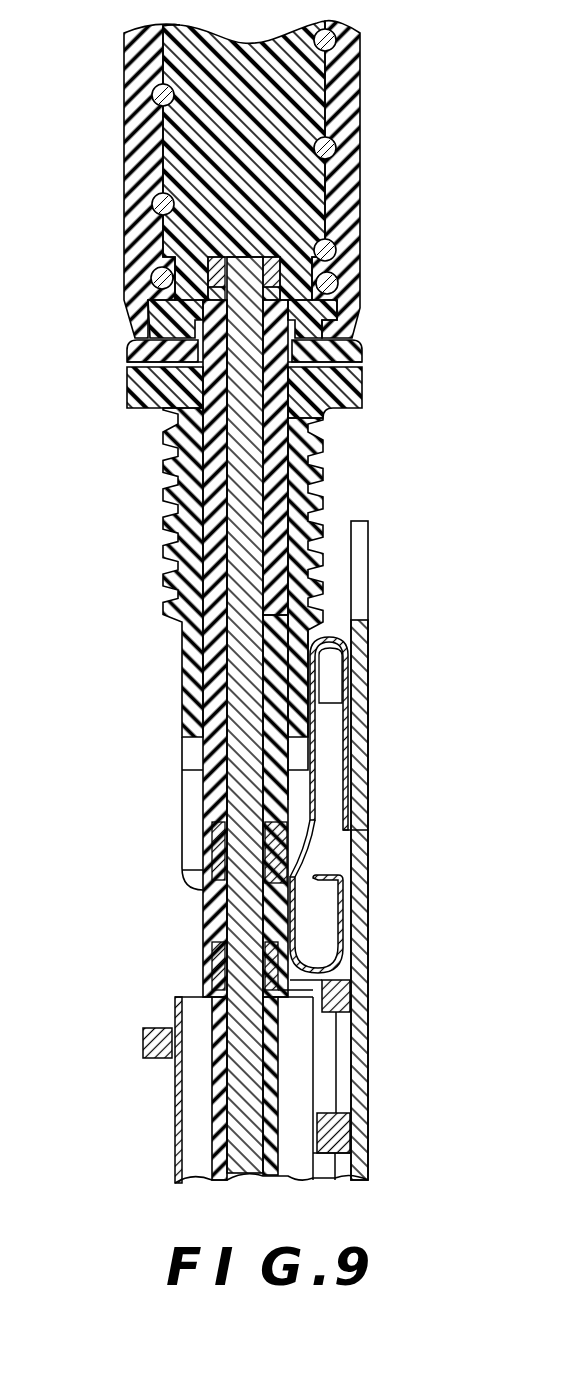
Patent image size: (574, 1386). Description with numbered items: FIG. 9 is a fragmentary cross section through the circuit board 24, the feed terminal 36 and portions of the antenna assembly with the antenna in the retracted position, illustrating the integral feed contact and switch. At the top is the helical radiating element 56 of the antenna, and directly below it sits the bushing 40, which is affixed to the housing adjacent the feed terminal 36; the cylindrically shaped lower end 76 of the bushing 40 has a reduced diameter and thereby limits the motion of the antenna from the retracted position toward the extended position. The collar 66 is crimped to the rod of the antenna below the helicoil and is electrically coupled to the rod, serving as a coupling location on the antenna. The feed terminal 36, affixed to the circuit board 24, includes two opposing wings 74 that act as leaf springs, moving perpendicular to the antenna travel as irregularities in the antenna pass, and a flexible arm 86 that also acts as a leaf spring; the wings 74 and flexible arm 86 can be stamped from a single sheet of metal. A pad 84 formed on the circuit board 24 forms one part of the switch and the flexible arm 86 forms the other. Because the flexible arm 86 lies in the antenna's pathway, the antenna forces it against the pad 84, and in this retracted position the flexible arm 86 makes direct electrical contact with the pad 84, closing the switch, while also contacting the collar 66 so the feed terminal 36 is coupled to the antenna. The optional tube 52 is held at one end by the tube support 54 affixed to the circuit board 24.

The helical radiating element 56 is at (108, 168).
The bushing 40 is at (352, 383).
The lower end of bushing 76 is at (182, 645).
The feed terminal 36 is at (158, 755).
The wings 74 is at (182, 827).
The collar 66 is at (203, 922).
The flexible arm 86 is at (332, 637).
The pad 84 is at (345, 897).
The circuit board 24 is at (370, 1087).
The tube 52 is at (175, 1113).
The tube support 54 is at (143, 1042).